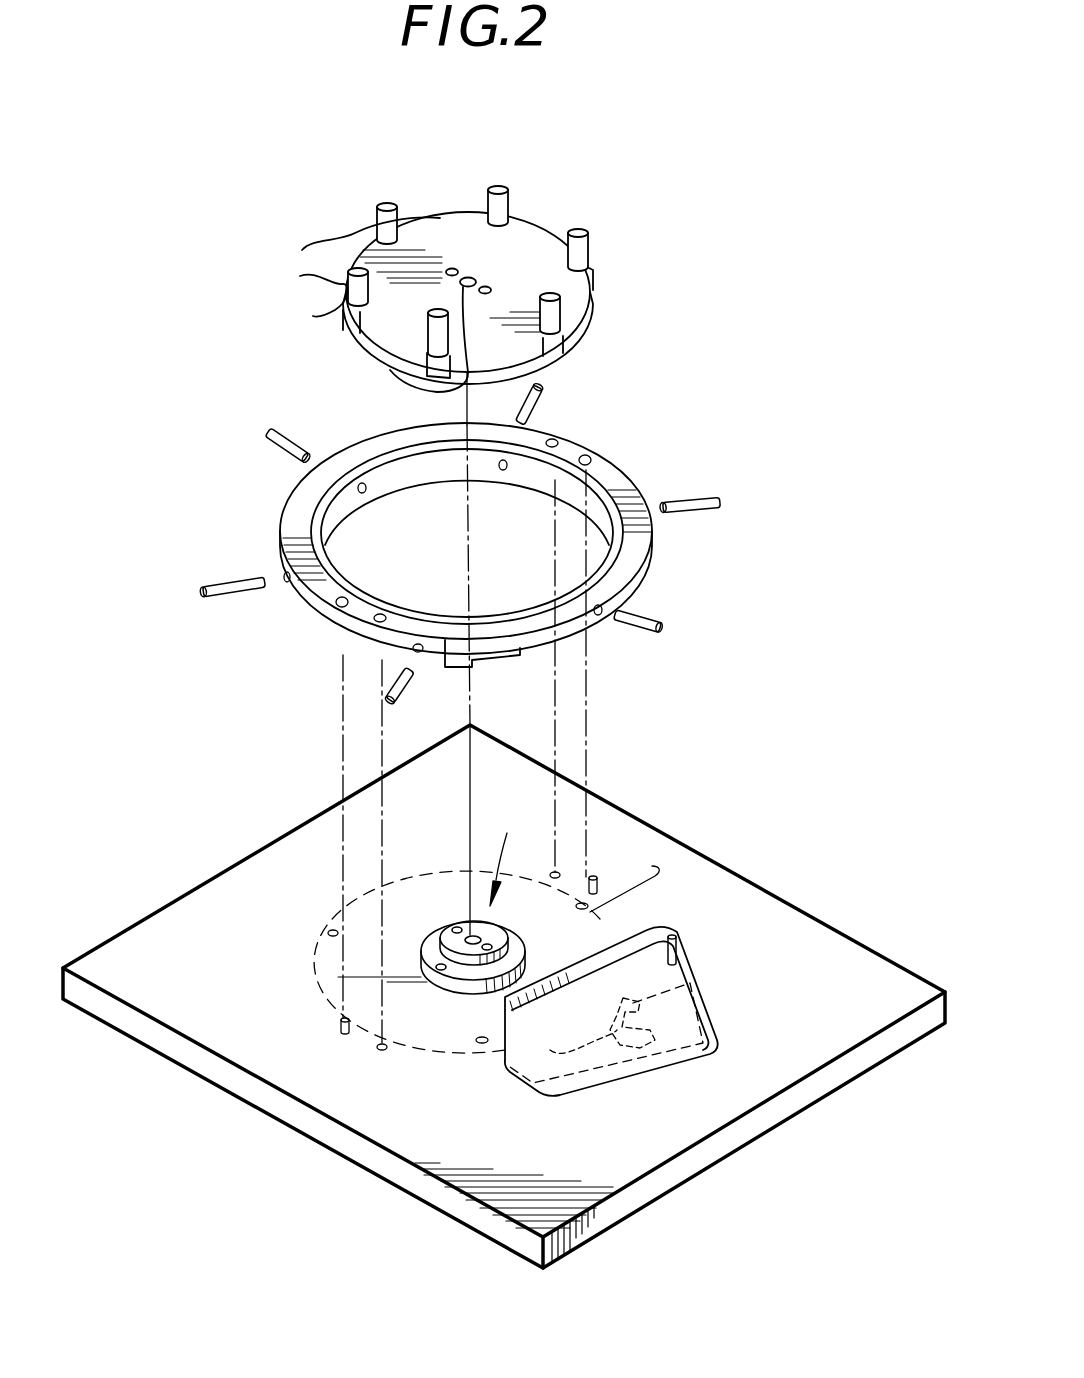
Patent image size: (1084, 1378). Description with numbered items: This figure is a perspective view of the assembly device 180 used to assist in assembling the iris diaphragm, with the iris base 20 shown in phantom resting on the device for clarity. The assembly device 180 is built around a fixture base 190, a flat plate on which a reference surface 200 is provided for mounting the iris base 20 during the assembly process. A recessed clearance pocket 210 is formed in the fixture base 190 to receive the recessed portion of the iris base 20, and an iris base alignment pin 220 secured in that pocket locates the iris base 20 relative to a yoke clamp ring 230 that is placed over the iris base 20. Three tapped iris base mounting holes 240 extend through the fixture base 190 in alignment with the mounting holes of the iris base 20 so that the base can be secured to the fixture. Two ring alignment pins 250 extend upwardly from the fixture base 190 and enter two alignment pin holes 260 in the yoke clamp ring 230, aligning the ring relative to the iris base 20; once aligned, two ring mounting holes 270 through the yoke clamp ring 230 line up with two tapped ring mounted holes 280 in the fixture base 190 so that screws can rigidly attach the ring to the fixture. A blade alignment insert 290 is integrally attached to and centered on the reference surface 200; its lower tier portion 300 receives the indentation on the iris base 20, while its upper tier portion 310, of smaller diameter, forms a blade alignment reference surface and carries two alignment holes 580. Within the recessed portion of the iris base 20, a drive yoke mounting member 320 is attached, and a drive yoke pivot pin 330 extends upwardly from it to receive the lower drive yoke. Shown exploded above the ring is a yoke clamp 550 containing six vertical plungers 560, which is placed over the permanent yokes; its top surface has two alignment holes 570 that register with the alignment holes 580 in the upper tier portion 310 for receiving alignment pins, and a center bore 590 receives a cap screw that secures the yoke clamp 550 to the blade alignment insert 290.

The assembly device 180 is at (697, 122).
The yoke clamp 550 is at (597, 293).
The vertical plungers 560 is at (470, 204).
The alignment holes 570 is at (458, 262).
The center bore 590 is at (433, 387).
The yoke clamp ring 230 is at (705, 451).
The alignment pin holes 260 is at (593, 453).
The ring mounting holes 270 is at (555, 440).
The fixture base 190 is at (504, 996).
The reference surface 200 is at (250, 868).
The iris base 20 is at (420, 870).
The lower tier portion 300 is at (447, 964).
The upper tier portion 310 is at (499, 932).
The alignment holes 580 is at (457, 927).
The blade alignment insert 290 is at (507, 857).
The iris base mounting holes 240 is at (657, 873).
The ring alignment pins 250 is at (598, 880).
The tapped ring mounted holes 280 is at (560, 874).
The recessed clearance pocket 210 is at (620, 965).
The iris base alignment pin 220 is at (678, 945).
The drive yoke pivot pin 330 is at (703, 987).
The drive yoke mounting member 320 is at (587, 1025).